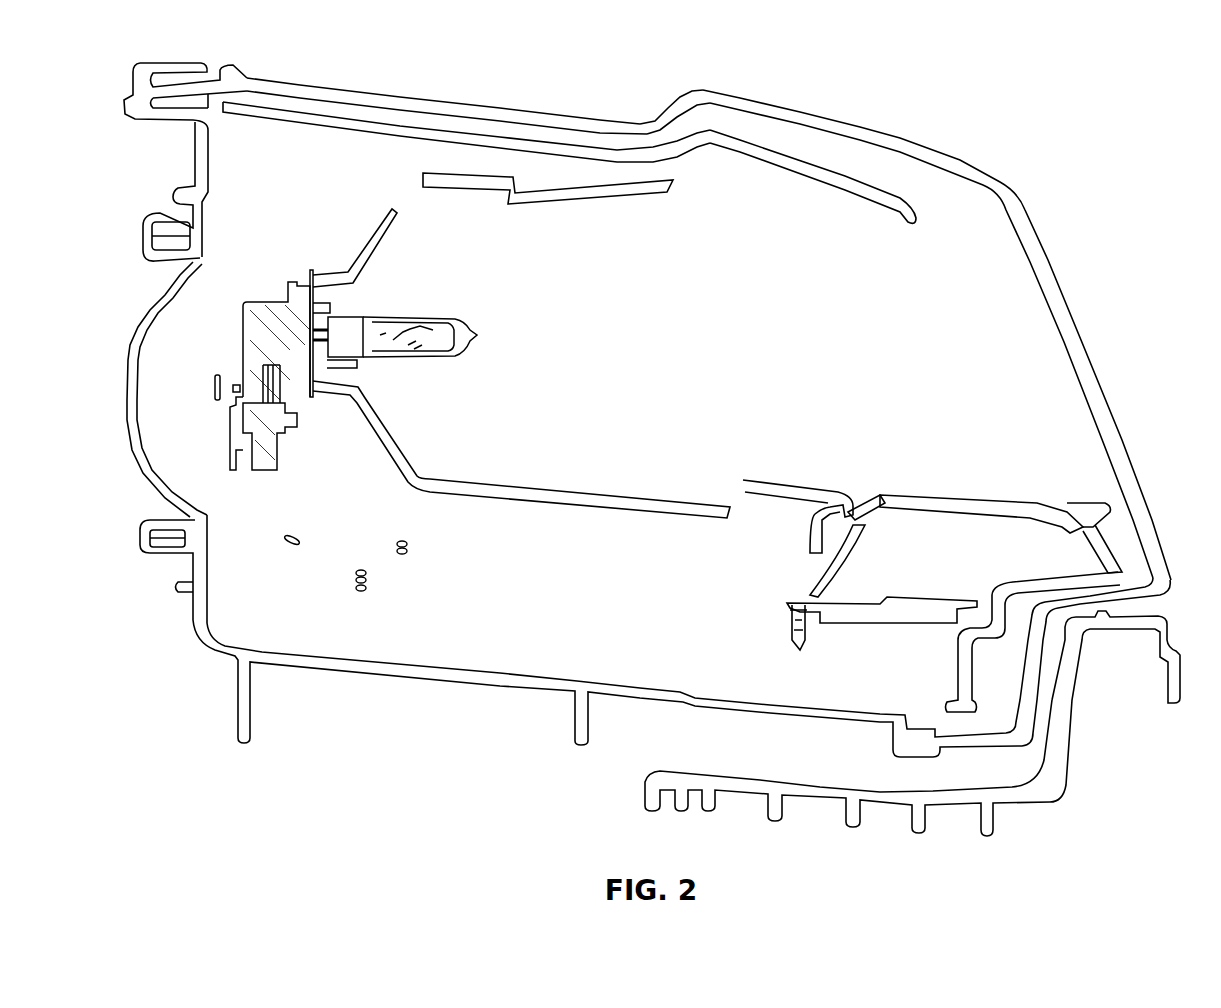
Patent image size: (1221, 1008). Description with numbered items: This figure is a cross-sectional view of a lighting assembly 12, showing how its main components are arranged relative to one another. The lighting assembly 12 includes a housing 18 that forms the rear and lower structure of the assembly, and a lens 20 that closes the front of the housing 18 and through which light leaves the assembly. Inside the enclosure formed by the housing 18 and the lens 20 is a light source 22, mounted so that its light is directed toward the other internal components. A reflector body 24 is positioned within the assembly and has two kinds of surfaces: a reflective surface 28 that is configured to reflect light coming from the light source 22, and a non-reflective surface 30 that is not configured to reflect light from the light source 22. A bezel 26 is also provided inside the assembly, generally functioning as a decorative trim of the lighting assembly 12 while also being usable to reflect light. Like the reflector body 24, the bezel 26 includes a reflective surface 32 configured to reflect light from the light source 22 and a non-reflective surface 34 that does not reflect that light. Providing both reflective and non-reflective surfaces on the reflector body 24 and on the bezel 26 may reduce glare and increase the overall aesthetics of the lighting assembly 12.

The lighting assembly 12 is at (865, 104).
The housing 18 is at (392, 674).
The lens 20 is at (1045, 247).
The light source 22 is at (350, 334).
The reflector body 24 is at (463, 176).
The bezel 26 is at (727, 131).
The reflective surface 28 is at (388, 240).
The non-reflective surface 30 is at (556, 485).
The reflective surface 32 is at (526, 150).
The non-reflective surface 34 is at (845, 195).